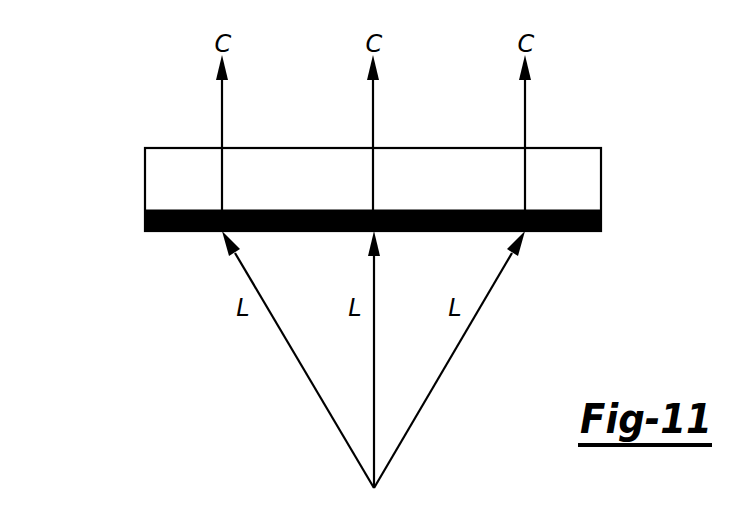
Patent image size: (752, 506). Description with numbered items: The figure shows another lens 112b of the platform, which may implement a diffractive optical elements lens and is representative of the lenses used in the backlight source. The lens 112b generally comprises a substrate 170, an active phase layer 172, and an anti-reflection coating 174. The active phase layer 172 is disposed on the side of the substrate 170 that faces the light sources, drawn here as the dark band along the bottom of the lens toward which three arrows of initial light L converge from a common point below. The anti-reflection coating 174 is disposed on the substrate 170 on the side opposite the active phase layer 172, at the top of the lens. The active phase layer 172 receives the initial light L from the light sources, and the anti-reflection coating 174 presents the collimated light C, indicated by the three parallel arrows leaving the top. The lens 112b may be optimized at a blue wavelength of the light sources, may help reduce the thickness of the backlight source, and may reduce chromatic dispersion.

The lens 112b is at (363, 172).
The substrate 170 is at (601, 178).
The active phase layer 172 is at (601, 219).
The anti-reflection coating 174 is at (565, 148).